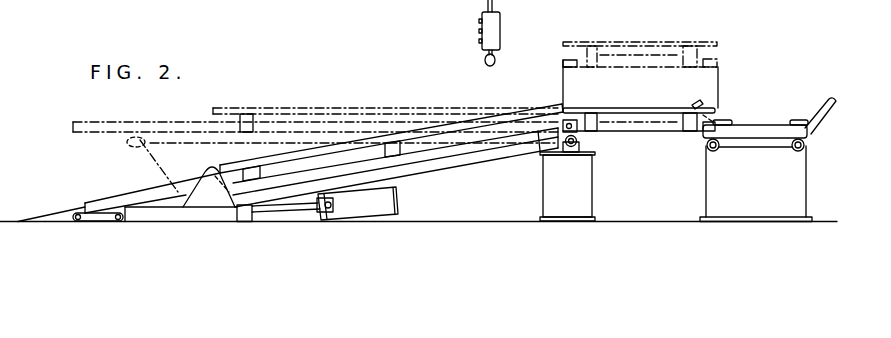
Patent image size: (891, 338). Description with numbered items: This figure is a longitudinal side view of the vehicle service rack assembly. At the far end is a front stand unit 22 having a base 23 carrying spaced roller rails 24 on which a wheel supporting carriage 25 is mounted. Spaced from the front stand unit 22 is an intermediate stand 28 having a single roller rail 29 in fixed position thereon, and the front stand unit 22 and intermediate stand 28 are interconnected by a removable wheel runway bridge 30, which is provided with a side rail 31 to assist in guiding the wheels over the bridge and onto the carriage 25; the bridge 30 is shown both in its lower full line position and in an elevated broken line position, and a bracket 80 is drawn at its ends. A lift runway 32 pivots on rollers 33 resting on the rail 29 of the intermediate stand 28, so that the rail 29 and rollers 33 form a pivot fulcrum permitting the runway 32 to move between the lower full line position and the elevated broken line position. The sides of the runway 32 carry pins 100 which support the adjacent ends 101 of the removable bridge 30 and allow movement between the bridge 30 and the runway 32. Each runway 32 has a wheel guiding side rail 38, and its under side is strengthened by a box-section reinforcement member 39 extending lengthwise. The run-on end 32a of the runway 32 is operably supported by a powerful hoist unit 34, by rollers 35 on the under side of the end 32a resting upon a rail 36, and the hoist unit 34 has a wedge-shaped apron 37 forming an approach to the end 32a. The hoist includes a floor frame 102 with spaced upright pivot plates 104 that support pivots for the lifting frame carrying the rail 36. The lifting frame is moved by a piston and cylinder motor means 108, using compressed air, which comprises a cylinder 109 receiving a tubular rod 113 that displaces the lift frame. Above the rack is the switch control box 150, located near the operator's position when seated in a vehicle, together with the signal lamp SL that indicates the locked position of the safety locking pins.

The switch control box 150 is at (501, 19).
The signal lamp SL is at (485, 58).
The side rail 31 is at (571, 42).
The removable wheel runway bridge 30 is at (665, 55).
The adjacent end of bridge 101 is at (563, 60).
The clamp bracket 80 is at (712, 56).
The lift runway 32 is at (190, 103).
The wheel guiding side rail 38 is at (333, 143).
The box-section reinforcement member 39 is at (408, 165).
The run-on end 32a is at (121, 197).
The wedge-shaped apron 37 is at (60, 212).
The floor frame 102 is at (147, 216).
The hoist unit 34 is at (173, 222).
The upright pivot plate 104 is at (213, 196).
The roller 35 is at (127, 143).
The rail 36 is at (142, 150).
The rod 113 is at (285, 213).
The cylinder 109 is at (360, 208).
The piston and cylinder motor means 108 is at (402, 203).
The pin 100 is at (571, 124).
The roller 33 is at (580, 139).
The roller rail 29 is at (572, 155).
The intermediate stand 28 is at (596, 198).
The wheel supporting carriage 25 is at (767, 124).
The roller rail 24 is at (720, 152).
The front stand unit 22 is at (812, 157).
The base 23 is at (782, 224).